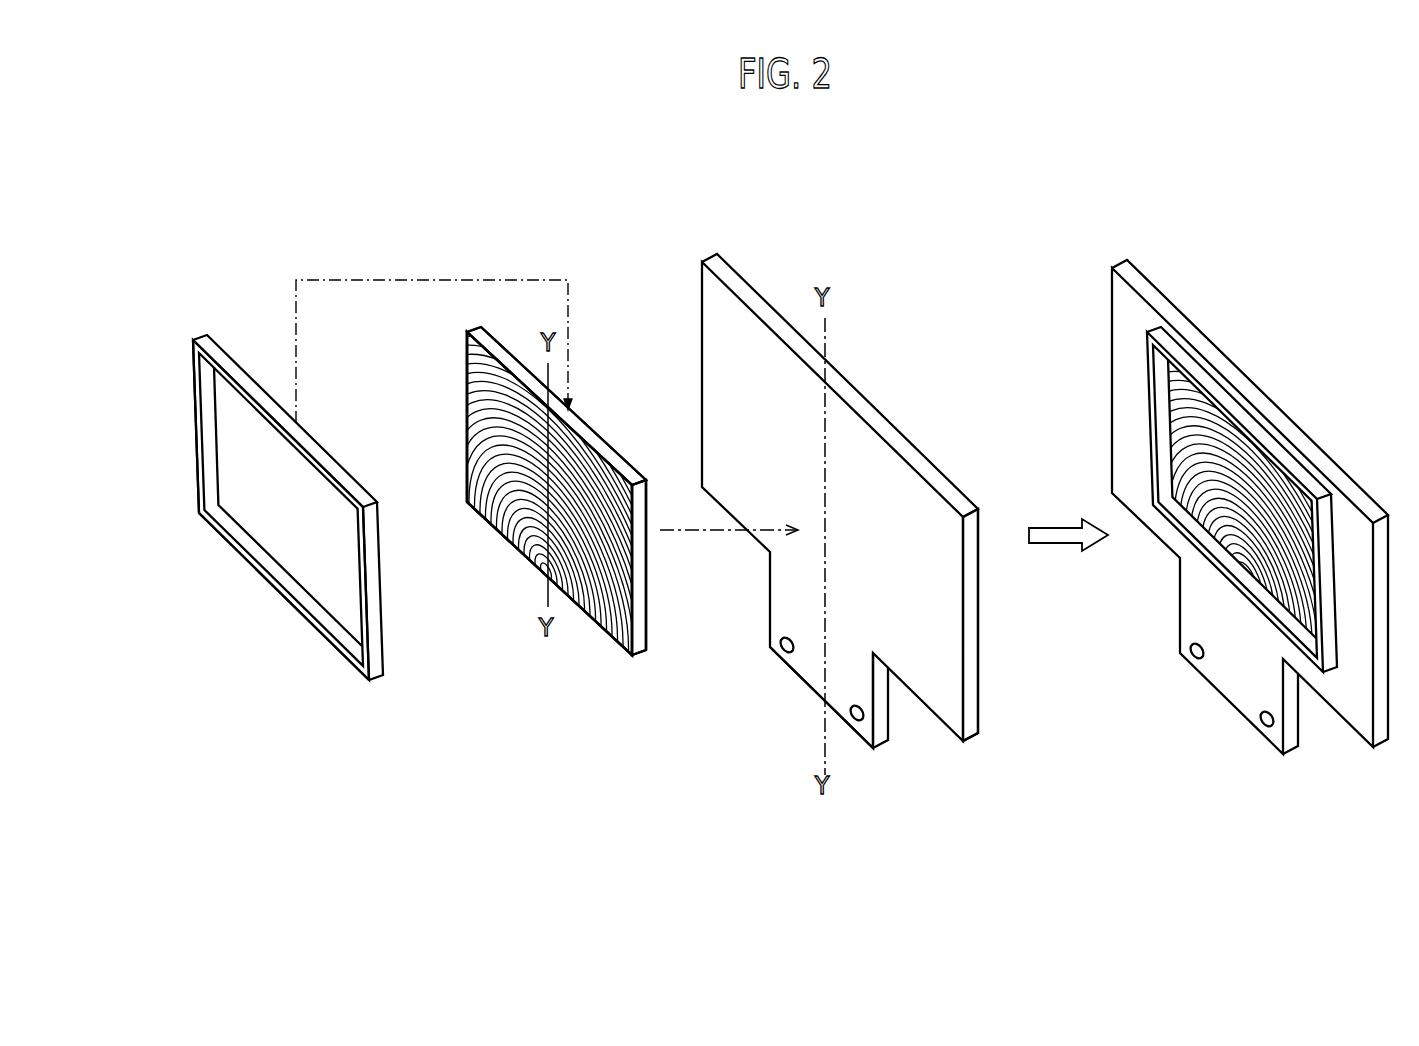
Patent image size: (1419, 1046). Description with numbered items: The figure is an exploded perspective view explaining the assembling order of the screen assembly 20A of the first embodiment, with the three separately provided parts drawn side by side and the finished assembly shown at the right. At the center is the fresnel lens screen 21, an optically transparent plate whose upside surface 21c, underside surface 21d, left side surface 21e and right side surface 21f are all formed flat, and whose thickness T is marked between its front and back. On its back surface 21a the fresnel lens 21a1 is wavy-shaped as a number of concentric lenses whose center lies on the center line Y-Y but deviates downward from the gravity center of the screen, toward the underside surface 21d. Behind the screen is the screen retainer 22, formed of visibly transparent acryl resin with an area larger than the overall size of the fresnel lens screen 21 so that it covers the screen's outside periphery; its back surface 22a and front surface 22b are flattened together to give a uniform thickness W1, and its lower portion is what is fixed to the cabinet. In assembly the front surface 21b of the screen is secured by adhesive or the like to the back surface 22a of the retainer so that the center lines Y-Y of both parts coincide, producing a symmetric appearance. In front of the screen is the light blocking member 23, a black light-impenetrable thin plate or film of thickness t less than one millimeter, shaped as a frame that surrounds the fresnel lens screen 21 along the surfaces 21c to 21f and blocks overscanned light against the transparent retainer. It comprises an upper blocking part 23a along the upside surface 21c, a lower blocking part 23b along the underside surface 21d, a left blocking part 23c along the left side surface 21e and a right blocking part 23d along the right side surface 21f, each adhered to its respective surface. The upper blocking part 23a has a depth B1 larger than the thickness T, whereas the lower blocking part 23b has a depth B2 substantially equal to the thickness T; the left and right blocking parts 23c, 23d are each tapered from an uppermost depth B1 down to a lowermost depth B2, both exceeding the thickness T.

The screen assembly 20A is at (850, 213).
The fresnel lens screen 21 is at (522, 350).
The back surface 21a is at (548, 540).
The fresnel lens 21a1 is at (598, 600).
The front surface 21b is at (648, 613).
The upside surface 21c is at (597, 445).
The underside surface 21d is at (492, 517).
The left side surface 21e is at (465, 408).
The right side surface 21f is at (636, 565).
The screen retainer 22 is at (861, 390).
The back surface 22a is at (935, 693).
The front surface 22b is at (982, 684).
The light blocking member 23 is at (233, 342).
The upper blocking part 23a is at (308, 442).
The lower blocking part 23b is at (290, 596).
The left blocking part 23c is at (200, 434).
The right blocking part 23d is at (372, 561).
The thickness t is at (218, 417).
The depth B1 is at (225, 405).
The depth B2 is at (290, 552).
The thickness T is at (645, 665).
The thickness W1 is at (979, 500).